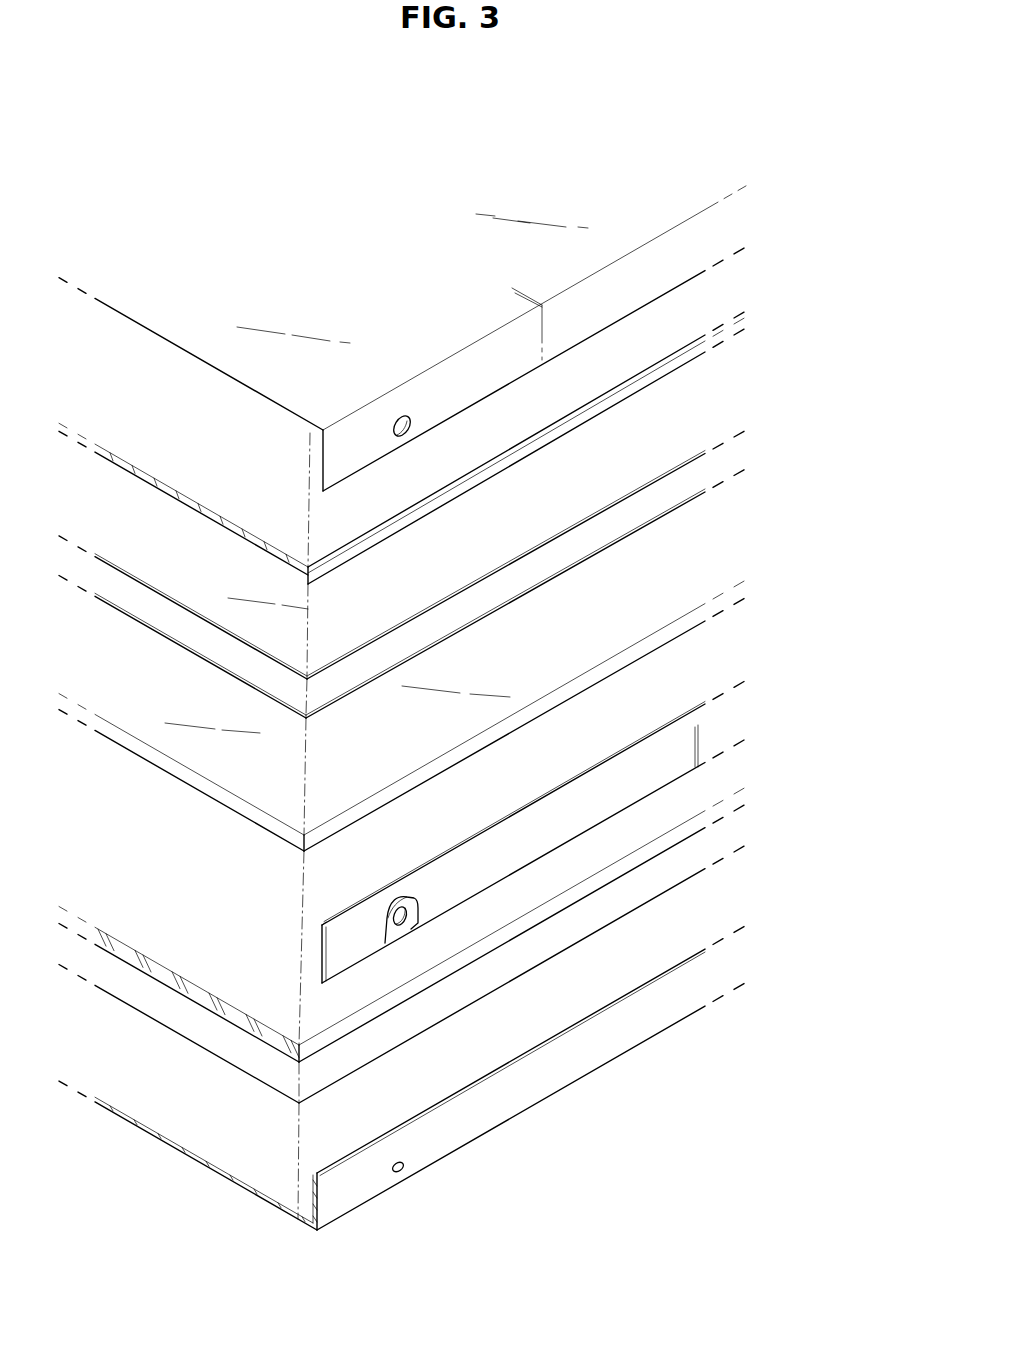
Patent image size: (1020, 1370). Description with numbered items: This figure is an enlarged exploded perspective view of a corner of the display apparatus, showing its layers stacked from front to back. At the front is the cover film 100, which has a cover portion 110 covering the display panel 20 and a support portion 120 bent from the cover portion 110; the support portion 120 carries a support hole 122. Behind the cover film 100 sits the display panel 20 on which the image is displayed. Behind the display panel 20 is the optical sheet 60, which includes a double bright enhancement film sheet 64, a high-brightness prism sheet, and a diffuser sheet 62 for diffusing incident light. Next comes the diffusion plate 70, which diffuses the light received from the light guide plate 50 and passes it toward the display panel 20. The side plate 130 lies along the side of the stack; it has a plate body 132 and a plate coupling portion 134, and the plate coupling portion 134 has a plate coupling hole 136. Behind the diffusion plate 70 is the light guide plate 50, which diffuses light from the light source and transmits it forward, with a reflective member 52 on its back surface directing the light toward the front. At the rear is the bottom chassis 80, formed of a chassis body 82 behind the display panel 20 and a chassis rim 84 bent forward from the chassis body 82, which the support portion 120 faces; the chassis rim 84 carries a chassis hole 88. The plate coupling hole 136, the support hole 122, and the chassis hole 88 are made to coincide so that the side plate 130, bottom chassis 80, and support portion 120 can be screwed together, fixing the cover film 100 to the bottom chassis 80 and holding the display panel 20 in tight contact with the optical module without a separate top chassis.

The cover film 100 is at (216, 352).
The cover portion 110 is at (623, 220).
The support portion 120 is at (529, 369).
The support hole 122 is at (397, 431).
The display panel 20 is at (708, 362).
The optical sheet 60 is at (462, 574).
The double bright enhancement film (DBEF) sheet 64 is at (643, 488).
The diffuser sheet 62 is at (643, 527).
The diffusion plate 70 is at (628, 633).
The side plate 130 is at (572, 833).
The plate body 132 is at (583, 805).
The plate coupling hole 136 is at (424, 893).
The plate coupling portion 134 is at (415, 913).
The light guide plate 50 is at (686, 834).
The reflective member 52 is at (677, 889).
The bottom chassis 80 is at (401, 1078).
The chassis body 82 is at (258, 1172).
The chassis rim 84 is at (528, 1078).
The chassis hole 88 is at (400, 1168).